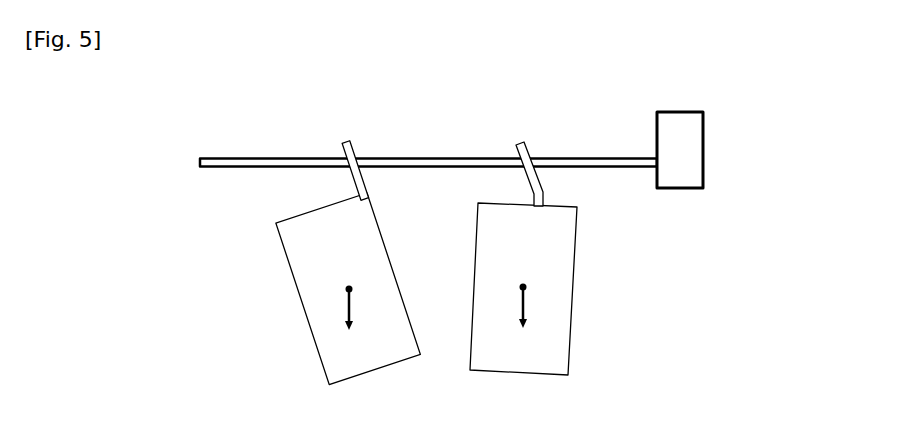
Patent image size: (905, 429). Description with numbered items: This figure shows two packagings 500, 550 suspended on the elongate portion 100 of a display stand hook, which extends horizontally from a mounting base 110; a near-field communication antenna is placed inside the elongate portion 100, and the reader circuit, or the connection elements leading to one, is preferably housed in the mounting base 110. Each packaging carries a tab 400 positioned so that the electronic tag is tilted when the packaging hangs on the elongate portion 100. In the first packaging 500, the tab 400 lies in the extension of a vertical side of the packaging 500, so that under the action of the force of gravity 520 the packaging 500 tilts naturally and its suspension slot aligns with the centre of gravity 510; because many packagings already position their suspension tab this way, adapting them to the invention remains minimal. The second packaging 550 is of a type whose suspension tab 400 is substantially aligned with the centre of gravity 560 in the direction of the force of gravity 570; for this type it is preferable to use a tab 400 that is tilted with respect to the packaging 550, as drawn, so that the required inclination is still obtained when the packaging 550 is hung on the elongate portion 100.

The elongate portion 100 is at (267, 169).
The mounting base 110 is at (705, 147).
The tab 400 is at (350, 143).
The packaging 500 is at (282, 245).
The centre of gravity 510 is at (349, 288).
The force of gravity 520 is at (347, 315).
The packaging 550 is at (577, 230).
The centre of gravity 560 is at (524, 287).
The force of gravity 570 is at (526, 305).